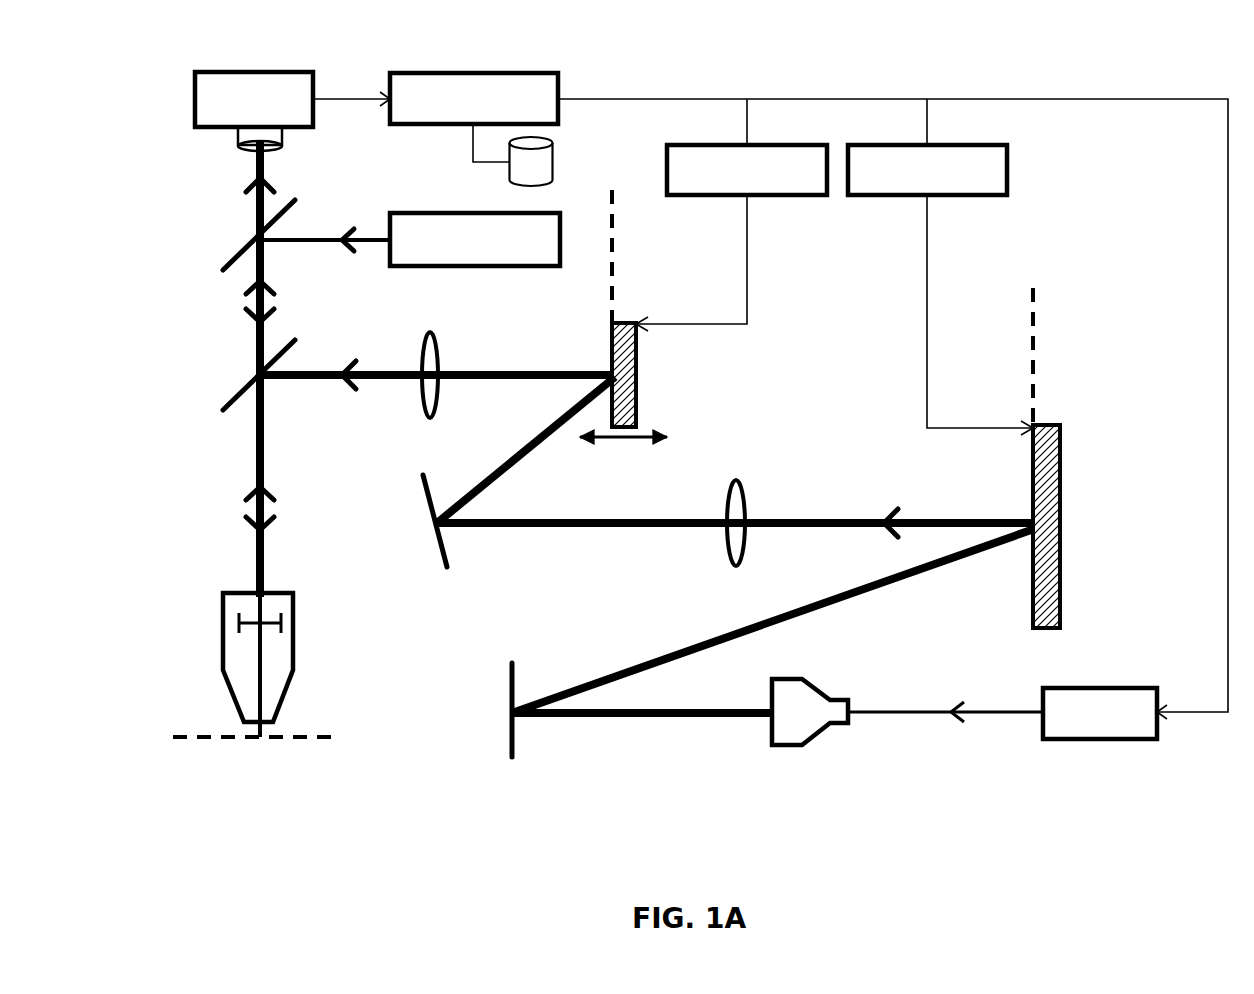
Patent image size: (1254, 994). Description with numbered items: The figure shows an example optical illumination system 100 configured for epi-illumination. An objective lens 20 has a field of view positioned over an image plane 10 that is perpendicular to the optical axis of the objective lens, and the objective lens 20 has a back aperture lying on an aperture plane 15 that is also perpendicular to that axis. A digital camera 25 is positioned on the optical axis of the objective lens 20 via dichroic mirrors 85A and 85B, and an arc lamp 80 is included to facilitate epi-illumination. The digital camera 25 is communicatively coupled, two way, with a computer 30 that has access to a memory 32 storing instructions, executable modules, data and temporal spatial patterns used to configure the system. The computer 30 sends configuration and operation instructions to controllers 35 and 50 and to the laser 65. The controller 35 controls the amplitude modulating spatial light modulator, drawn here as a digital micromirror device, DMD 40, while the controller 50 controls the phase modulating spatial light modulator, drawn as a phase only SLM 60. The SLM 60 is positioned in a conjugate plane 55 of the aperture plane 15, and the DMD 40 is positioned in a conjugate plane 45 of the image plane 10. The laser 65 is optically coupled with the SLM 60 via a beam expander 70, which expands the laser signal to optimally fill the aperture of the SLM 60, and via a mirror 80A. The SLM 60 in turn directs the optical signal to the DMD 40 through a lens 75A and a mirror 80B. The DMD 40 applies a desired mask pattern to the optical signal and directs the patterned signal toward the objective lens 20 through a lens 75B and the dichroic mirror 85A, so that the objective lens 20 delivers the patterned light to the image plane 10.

The optical illumination system 100 is at (769, 39).
The image plane 10 is at (163, 777).
The aperture plane 15 is at (122, 648).
The objective lens 20 is at (293, 620).
The digital camera 25 is at (257, 68).
The computer 30 is at (447, 70).
The memory 32 is at (531, 161).
The controller 35 is at (768, 197).
The amplitude modulating spatial light modulator 40 is at (637, 377).
The conjugate plane of the image plane 45 is at (650, 287).
The controller 50 is at (947, 197).
The conjugate plane of the aperture plane 55 is at (1080, 335).
The phase modulating spatial light modulator 60 is at (1090, 542).
The laser 65 is at (1093, 740).
The beam expander 70 is at (805, 677).
The lens 75A is at (747, 500).
The lens 75B is at (438, 347).
The arc lamp 80 is at (448, 213).
The mirror 80A is at (478, 723).
The mirror 80B is at (403, 543).
The dichroic mirror 85A is at (132, 422).
The dichroic mirror 85B is at (132, 292).